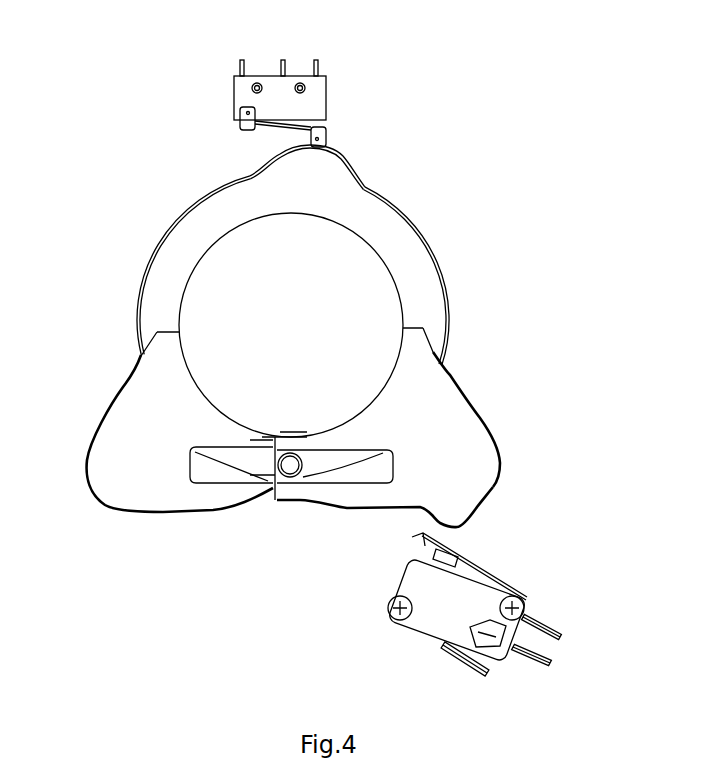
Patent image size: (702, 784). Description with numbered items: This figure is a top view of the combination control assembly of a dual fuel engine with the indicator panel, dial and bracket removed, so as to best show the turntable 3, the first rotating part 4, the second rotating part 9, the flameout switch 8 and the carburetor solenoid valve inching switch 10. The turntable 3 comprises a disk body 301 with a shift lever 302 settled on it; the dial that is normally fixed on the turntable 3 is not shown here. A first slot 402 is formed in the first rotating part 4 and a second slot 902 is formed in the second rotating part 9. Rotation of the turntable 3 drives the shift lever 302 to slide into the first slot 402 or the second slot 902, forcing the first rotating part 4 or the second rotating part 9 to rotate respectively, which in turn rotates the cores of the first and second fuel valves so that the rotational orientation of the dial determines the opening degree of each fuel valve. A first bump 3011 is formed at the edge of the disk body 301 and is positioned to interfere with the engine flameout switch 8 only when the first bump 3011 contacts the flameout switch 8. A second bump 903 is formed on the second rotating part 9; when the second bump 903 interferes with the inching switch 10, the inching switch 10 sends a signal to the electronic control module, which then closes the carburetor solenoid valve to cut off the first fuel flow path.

The turntable 3 is at (140, 282).
The disk body 301 is at (190, 247).
The first bump 3011 is at (313, 163).
The shift lever 302 is at (273, 457).
The first rotating part 4 is at (103, 425).
The first slot 402 is at (213, 470).
The flameout switch 8 is at (272, 103).
The second rotating part 9 is at (472, 403).
The second slot 902 is at (378, 470).
The second bump 903 is at (457, 513).
The inching switch 10 is at (477, 598).